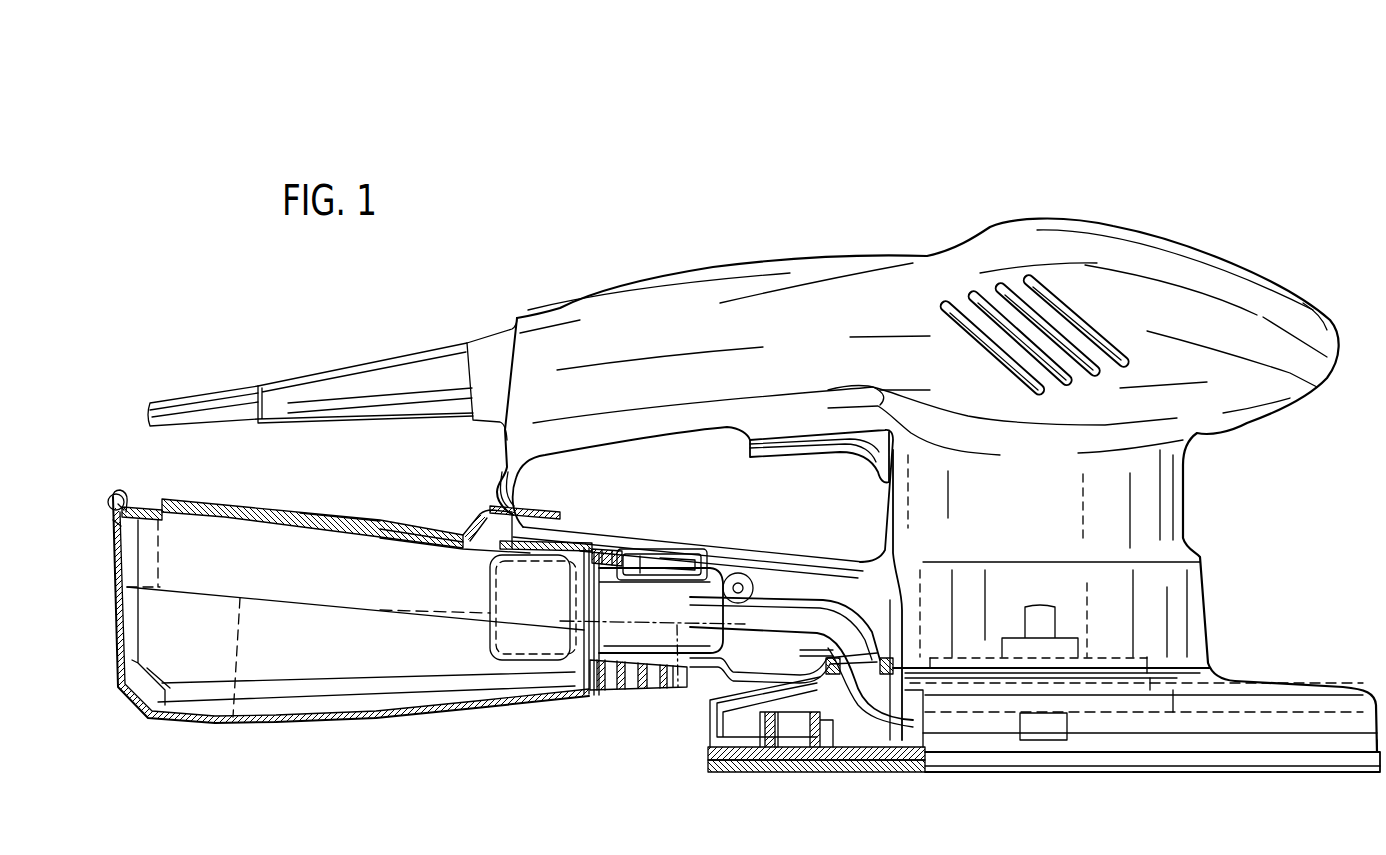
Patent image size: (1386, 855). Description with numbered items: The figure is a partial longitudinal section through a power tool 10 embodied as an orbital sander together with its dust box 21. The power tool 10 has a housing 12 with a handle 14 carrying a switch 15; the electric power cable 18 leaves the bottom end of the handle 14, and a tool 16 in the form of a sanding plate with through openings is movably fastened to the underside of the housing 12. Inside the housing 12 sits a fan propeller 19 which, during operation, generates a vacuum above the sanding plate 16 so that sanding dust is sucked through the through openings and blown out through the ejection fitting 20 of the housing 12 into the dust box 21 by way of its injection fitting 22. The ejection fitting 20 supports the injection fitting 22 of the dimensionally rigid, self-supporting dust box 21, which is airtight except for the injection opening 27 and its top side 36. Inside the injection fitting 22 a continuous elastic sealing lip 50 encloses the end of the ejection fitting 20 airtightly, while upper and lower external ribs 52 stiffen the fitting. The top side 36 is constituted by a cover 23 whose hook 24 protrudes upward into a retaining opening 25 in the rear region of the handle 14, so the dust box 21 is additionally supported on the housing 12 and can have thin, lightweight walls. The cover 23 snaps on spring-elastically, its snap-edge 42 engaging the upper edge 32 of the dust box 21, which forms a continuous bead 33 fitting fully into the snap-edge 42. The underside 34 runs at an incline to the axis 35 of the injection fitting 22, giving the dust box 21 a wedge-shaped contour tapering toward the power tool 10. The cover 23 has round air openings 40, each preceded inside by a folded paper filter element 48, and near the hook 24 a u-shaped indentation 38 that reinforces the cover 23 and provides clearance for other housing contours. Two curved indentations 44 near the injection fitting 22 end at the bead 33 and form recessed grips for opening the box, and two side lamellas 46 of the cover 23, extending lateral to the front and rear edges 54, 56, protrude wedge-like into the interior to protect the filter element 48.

The power tool 10 is at (1218, 240).
The housing 12 is at (1173, 502).
The handle 14 is at (664, 296).
The switch 15 is at (795, 447).
The tool 16 is at (910, 760).
The electric power cable 18 is at (200, 404).
The fan propeller 19 is at (1143, 700).
The ejection fitting 20 is at (650, 644).
The dust box 21 is at (460, 718).
The injection fitting 22 is at (659, 556).
The cover 23 is at (252, 503).
The hook 24 is at (478, 516).
The retaining opening 25 is at (507, 512).
The injection opening 27 is at (595, 602).
The upper edge 32 is at (121, 507).
The bead 33 is at (102, 504).
The underside 34 is at (234, 723).
The axis 35 is at (680, 690).
The top side 36 is at (335, 511).
The indentation 38 is at (408, 527).
The air openings 40 is at (436, 540).
The snap-edge 42 is at (110, 514).
The curved indentations 44 is at (503, 637).
The side lamellas 46 is at (237, 567).
The filter element 48 is at (143, 560).
The sealing lip 50 is at (633, 556).
The external ribs 52 is at (592, 690).
The front edge 54 is at (606, 560).
The rear edge 56 is at (104, 516).